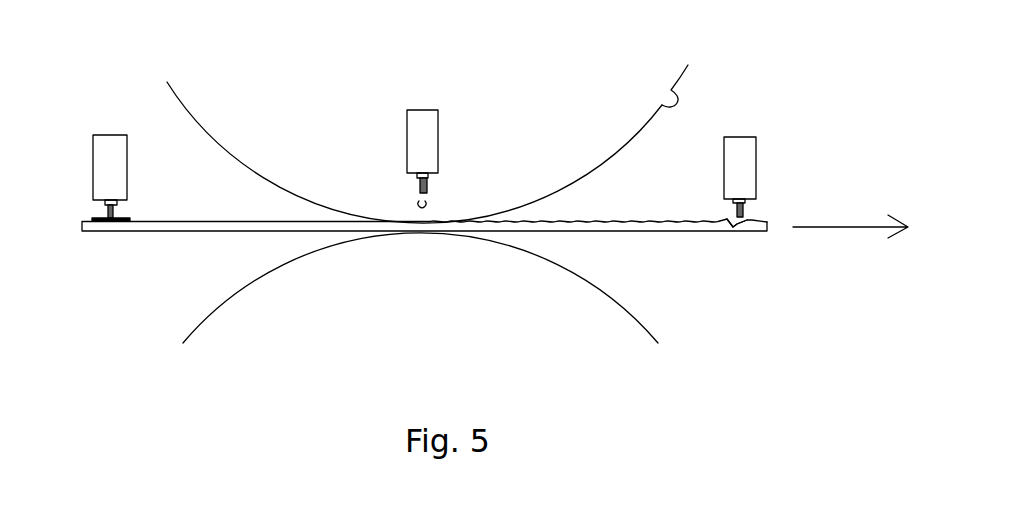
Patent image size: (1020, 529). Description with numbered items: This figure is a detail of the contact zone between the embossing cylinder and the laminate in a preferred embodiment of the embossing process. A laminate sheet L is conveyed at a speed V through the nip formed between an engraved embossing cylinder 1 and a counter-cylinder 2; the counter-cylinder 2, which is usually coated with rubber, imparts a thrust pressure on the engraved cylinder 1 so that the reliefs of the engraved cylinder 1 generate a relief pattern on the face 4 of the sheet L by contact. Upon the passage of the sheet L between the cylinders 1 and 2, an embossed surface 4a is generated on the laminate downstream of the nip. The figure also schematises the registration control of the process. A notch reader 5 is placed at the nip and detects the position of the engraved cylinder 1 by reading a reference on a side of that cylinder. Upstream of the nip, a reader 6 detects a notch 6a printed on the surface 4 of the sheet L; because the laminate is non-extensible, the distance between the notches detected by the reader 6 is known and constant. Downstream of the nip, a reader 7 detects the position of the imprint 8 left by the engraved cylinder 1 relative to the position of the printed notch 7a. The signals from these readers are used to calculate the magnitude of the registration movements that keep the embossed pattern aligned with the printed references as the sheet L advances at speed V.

The engraved embossing cylinder 1 is at (323, 193).
The counter-cylinder 2 is at (323, 257).
The face of laminate 4 is at (212, 215).
The embossed surface 4a is at (637, 221).
The notch reader 5 is at (432, 122).
The reader 6 is at (112, 148).
The notch 6a is at (108, 221).
The reader 7 is at (740, 143).
The printed notch 7a is at (725, 222).
The imprint 8 is at (665, 96).
The laminate sheet L is at (173, 225).
The speed V is at (850, 219).